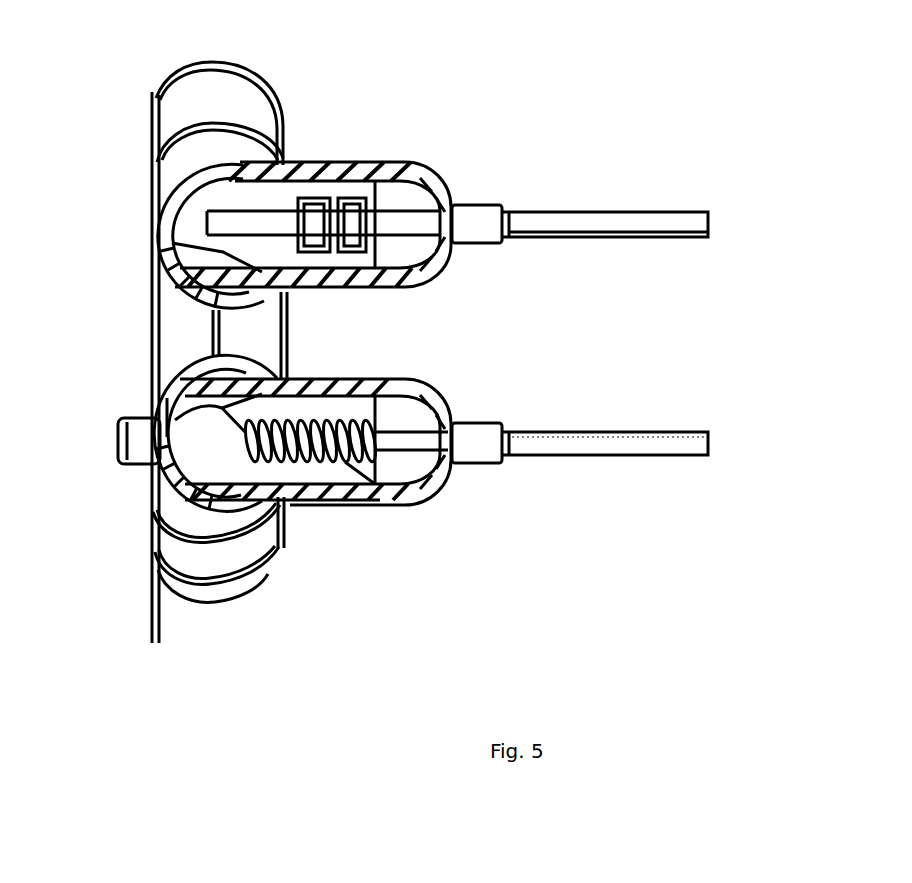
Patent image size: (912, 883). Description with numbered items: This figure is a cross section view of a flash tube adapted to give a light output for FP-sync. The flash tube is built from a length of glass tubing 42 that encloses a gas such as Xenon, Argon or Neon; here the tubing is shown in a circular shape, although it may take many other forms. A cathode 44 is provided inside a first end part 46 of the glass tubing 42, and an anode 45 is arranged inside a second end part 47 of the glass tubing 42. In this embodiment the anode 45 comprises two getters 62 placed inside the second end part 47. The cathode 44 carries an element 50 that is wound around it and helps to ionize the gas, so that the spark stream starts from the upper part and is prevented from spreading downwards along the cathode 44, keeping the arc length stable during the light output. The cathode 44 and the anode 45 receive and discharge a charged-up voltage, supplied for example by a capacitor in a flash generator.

The glass tubing 42 is at (158, 95).
The second end part 47 is at (457, 178).
The contact elements 62 is at (313, 192).
The anode 45 is at (618, 210).
The cathode 44 is at (410, 428).
The first end part 46 is at (322, 508).
The element 50 is at (390, 490).